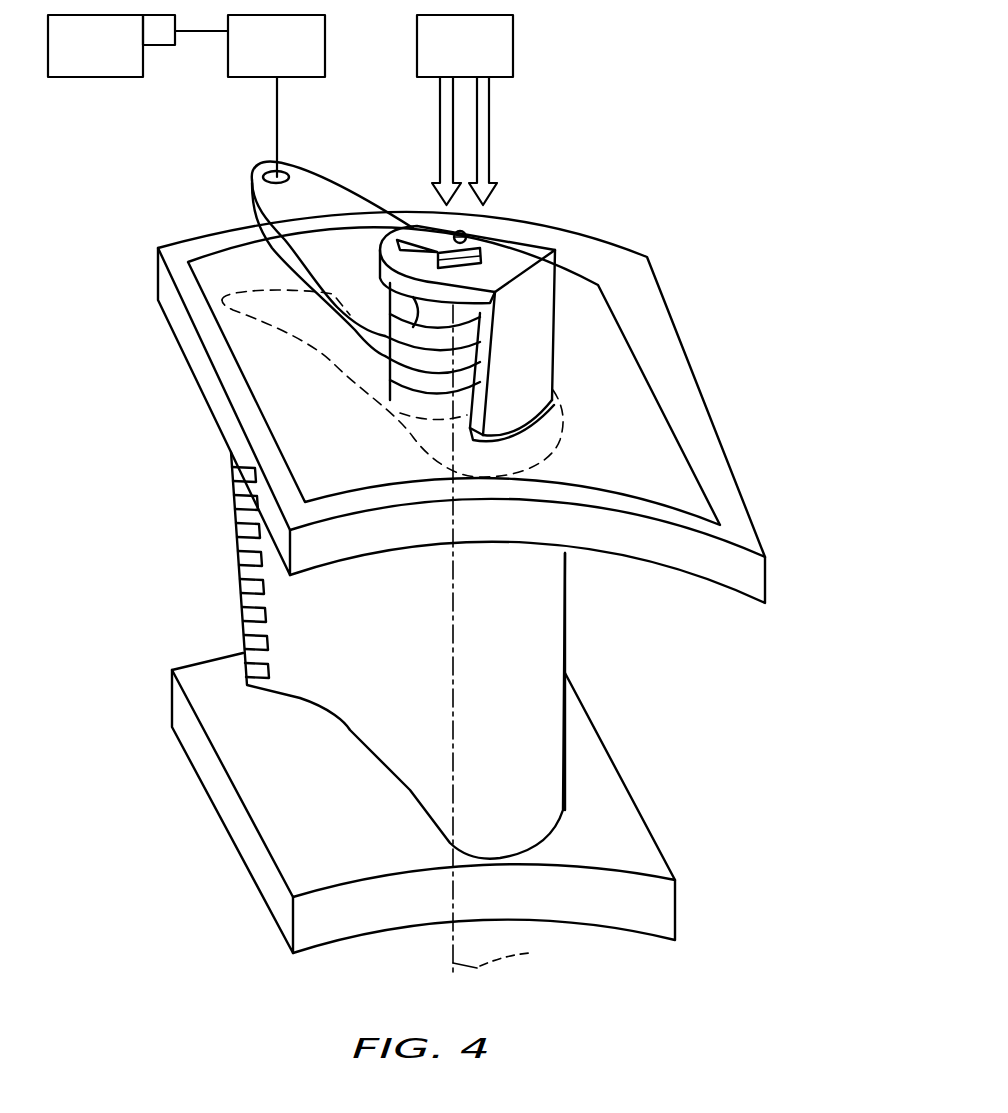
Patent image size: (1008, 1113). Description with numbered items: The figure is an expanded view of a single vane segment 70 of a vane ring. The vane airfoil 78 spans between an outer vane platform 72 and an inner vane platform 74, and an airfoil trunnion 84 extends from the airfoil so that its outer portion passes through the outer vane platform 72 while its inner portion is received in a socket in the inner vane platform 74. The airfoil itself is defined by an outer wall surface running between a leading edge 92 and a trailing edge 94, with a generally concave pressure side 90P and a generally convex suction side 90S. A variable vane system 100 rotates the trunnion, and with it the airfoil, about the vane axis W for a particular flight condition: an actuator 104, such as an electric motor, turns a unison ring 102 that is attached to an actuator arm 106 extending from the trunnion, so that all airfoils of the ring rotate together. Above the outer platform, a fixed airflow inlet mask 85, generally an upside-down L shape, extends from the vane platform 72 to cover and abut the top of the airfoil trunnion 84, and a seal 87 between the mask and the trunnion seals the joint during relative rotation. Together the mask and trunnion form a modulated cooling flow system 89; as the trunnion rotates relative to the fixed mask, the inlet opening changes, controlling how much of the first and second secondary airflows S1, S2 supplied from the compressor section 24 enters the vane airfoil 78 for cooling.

The compressor section 24 is at (480, 61).
The fixture 70 is at (718, 203).
The outer vane platform 72 is at (752, 572).
The inner vane platform 74 is at (657, 908).
The vane airfoil 78 is at (416, 655).
The airfoil trunnion 84 is at (423, 385).
The fixed airflow inlet mask 85 is at (522, 230).
The seal 87 is at (385, 327).
The modulated cooling flow system 89 is at (587, 110).
The suction side 90S is at (543, 623).
The pressure side 90P is at (392, 703).
The leading edge 92 is at (508, 713).
The trailing edge 94 is at (240, 576).
The variable vane system 100 is at (186, 99).
The unison ring 102 is at (228, 103).
The actuator 104 is at (118, 61).
The actuator arm 106 is at (332, 207).
The first secondary airflow S1 is at (445, 125).
The second secondary airflow S2 is at (485, 132).
The vane axis W is at (508, 954).